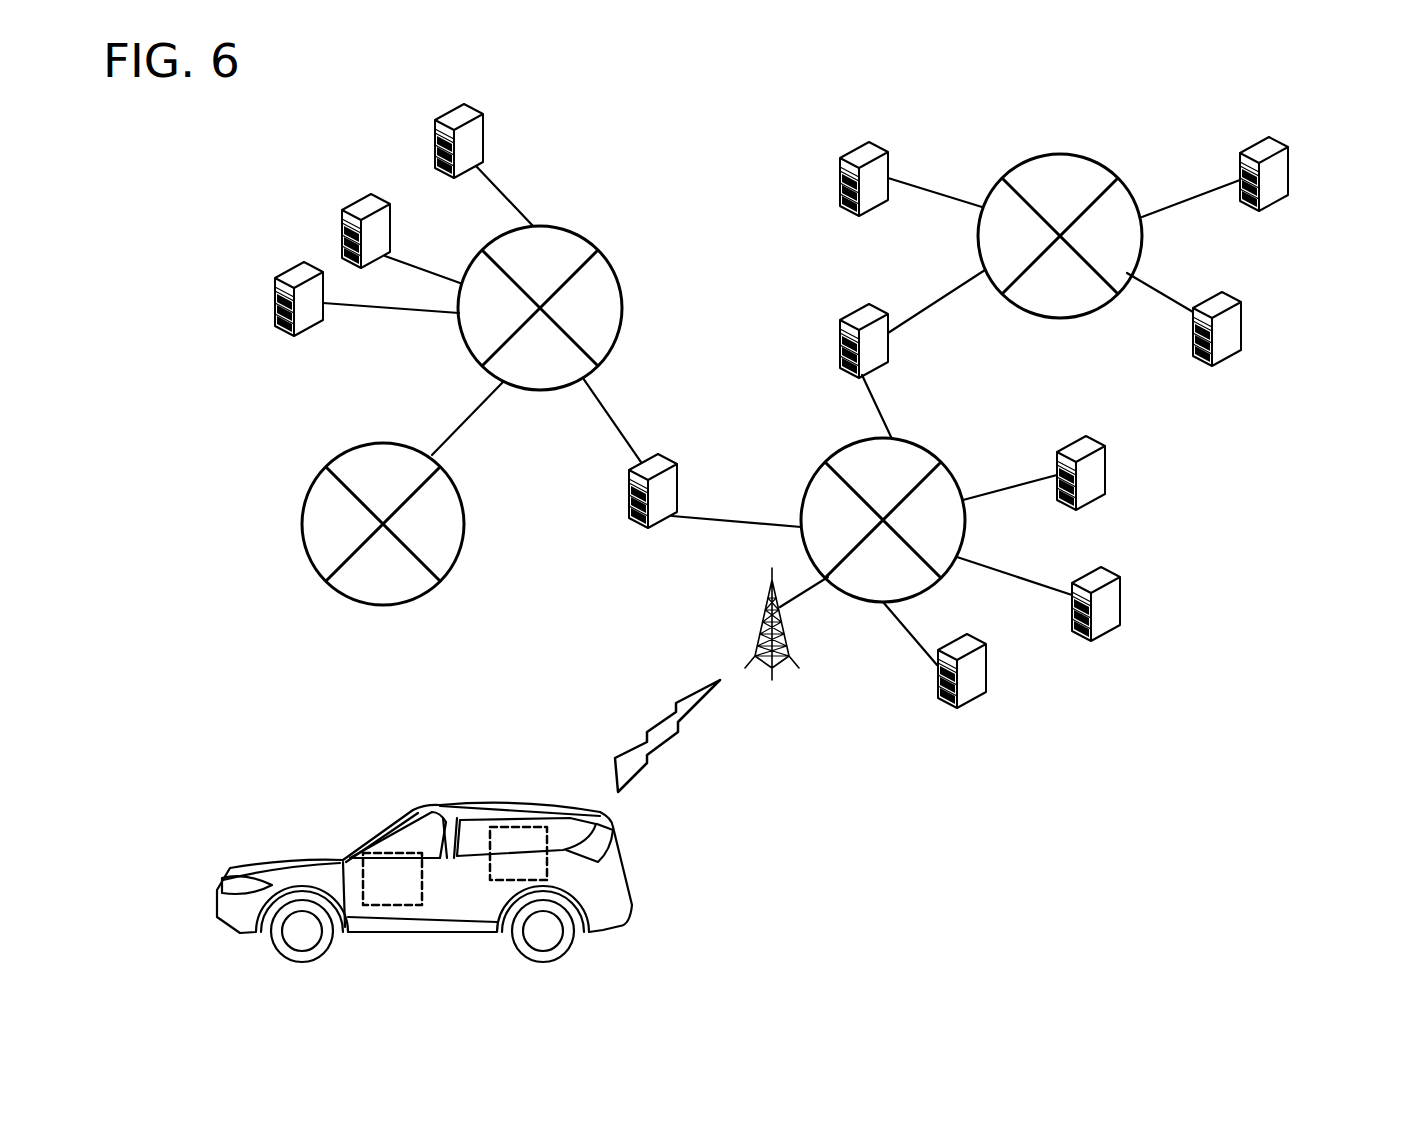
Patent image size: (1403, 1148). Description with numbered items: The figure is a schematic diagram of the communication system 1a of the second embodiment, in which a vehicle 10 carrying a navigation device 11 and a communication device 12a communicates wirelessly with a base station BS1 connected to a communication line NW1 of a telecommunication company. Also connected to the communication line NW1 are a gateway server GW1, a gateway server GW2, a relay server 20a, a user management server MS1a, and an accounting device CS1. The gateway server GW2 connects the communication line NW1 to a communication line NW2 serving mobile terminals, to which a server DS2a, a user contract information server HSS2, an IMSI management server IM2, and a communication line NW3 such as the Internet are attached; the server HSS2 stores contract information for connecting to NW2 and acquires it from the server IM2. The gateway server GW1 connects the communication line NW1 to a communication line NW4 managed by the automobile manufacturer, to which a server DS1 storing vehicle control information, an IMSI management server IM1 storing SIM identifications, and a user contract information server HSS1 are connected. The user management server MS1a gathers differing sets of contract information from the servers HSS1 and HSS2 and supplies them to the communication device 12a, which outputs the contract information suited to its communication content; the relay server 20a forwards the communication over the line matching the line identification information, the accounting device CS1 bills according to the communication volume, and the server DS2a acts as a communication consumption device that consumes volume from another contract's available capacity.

The communication system 1a is at (229, 130).
The IMSI management server IM2 is at (433, 127).
The user contract information server HSS2 is at (342, 217).
The server DS2a is at (275, 285).
The communication line NW2 is at (587, 238).
The communication line NW3 is at (465, 517).
The server DS1 is at (840, 180).
The gateway server GW1 is at (840, 345).
The communication line NW4 is at (1102, 165).
The IMSI management server IM1 is at (1288, 178).
The user contract information server HSS1 is at (1242, 327).
The gateway server GW2 is at (680, 487).
The communication line NW1 is at (933, 448).
The accounting device CS1 is at (1108, 463).
The relay server 20a is at (1121, 603).
The user management server MS1a is at (988, 668).
The base station BS1 is at (757, 633).
The vehicle 10 is at (630, 880).
The navigation device 11 is at (397, 852).
The communication device 12a is at (515, 827).